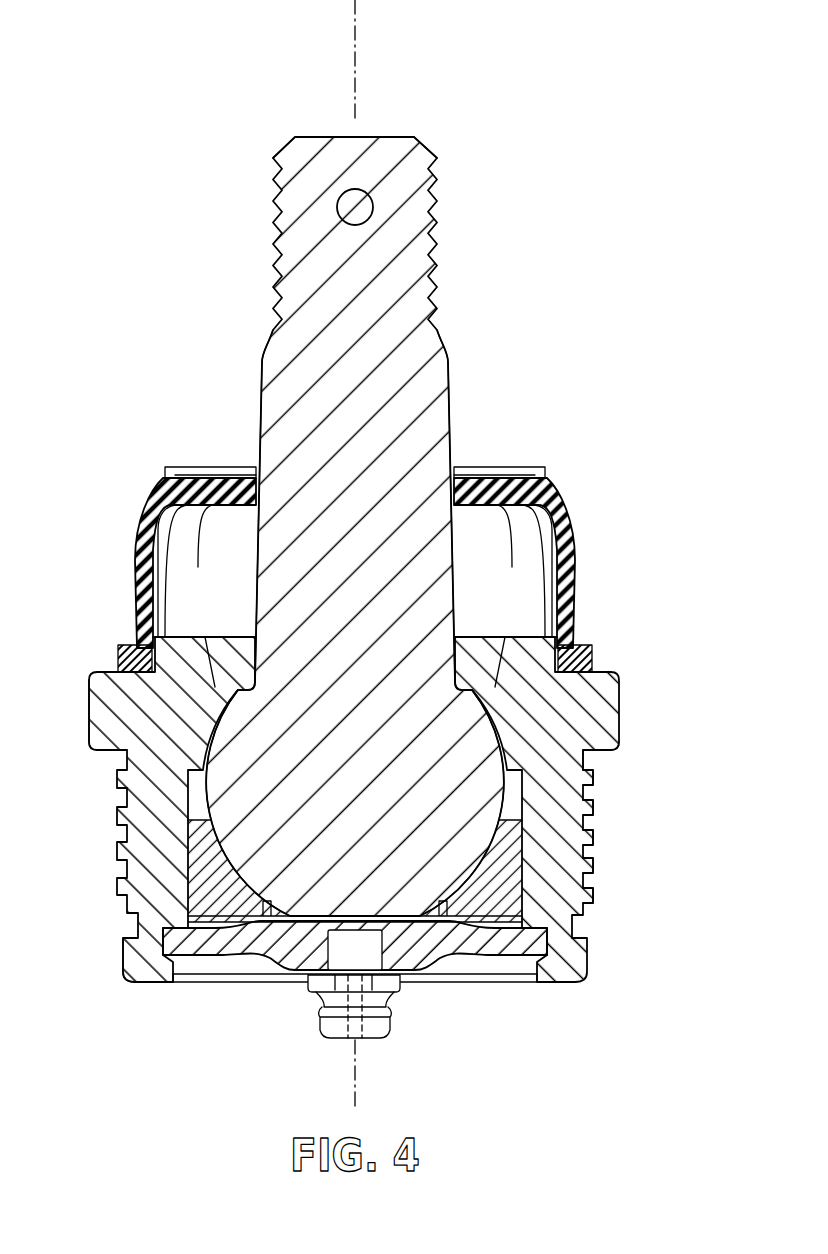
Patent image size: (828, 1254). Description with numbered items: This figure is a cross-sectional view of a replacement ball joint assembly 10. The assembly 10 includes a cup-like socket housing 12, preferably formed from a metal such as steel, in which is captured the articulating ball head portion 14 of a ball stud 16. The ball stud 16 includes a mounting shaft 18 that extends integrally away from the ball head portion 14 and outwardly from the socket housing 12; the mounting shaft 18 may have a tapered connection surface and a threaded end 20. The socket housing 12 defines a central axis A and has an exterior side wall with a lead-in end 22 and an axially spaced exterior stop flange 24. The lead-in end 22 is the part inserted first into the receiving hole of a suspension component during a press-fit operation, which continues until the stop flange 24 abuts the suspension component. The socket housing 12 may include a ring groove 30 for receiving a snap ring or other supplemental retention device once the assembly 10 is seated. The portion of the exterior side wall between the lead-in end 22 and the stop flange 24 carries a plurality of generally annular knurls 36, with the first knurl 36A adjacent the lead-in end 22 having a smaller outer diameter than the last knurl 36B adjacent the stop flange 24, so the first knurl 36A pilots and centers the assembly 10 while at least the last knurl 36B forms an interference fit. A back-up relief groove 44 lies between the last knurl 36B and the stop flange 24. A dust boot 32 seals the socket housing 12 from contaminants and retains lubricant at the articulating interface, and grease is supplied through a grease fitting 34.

The replacement ball joint assembly 10 is at (414, 627).
The socket housing 12 is at (414, 627).
The ball head portion 14 is at (368, 828).
The ball stud 16 is at (414, 627).
The mounting shaft 18 is at (259, 428).
The threaded end 20 is at (432, 226).
The lead-in end 22 is at (133, 985).
The stop flange 24 is at (100, 752).
The ring groove 30 is at (587, 927).
The dust boot 32 is at (573, 538).
The grease fitting 34 is at (330, 1020).
The knurls 36 is at (592, 826).
The first knurl 36A is at (592, 905).
The last knurl 36B is at (592, 777).
The back-up relief groove 44 is at (592, 760).
The central axis A is at (362, 47).